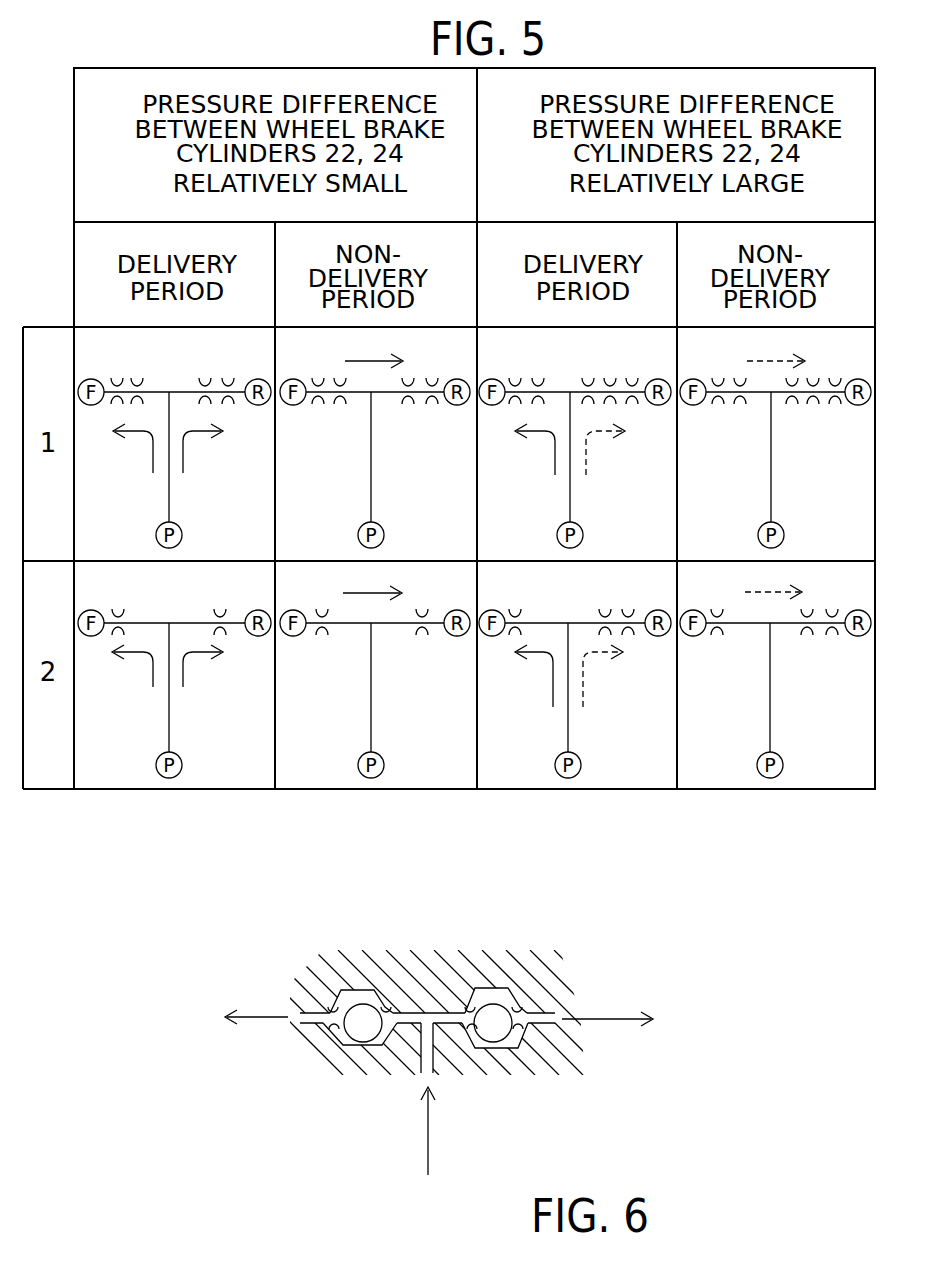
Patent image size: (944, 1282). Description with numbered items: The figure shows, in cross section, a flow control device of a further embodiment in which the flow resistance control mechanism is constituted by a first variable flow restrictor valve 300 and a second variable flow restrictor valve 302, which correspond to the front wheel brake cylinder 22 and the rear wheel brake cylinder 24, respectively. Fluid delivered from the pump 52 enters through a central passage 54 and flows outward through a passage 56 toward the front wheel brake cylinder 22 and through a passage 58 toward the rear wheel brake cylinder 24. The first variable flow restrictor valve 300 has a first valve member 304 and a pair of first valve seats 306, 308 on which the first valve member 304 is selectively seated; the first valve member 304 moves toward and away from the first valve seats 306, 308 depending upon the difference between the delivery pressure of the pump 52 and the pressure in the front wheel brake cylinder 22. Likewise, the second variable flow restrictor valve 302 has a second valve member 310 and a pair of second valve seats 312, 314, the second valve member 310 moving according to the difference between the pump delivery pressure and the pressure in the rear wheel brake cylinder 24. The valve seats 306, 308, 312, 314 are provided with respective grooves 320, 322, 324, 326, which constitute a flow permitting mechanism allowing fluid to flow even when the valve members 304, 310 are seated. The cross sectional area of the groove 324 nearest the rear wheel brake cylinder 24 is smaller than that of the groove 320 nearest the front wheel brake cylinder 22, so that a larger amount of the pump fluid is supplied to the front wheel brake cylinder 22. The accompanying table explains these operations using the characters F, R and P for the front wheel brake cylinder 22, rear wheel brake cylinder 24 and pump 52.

The first variable flow restrictor valve 300 is at (366, 930).
The second variable flow restrictor valve 302 is at (546, 924).
The first valve member 304 is at (358, 1044).
The first valve seat 306 is at (340, 1031).
The first valve seat 308 is at (392, 1006).
The second valve member 310 is at (497, 1042).
The second valve seat 312 is at (525, 1008).
The second valve seat 314 is at (472, 1035).
The groove 320 is at (334, 1008).
The groove 322 is at (363, 1036).
The groove 324 is at (518, 1033).
The groove 326 is at (469, 1005).
The pump 52 is at (432, 1170).
The pump delivery passage 54 is at (422, 1050).
The front brake fluid passage 56 is at (317, 1024).
The rear brake fluid passage 58 is at (550, 1024).
The front wheel brake cylinder 22 is at (231, 1018).
The rear wheel brake cylinder 24 is at (636, 1020).